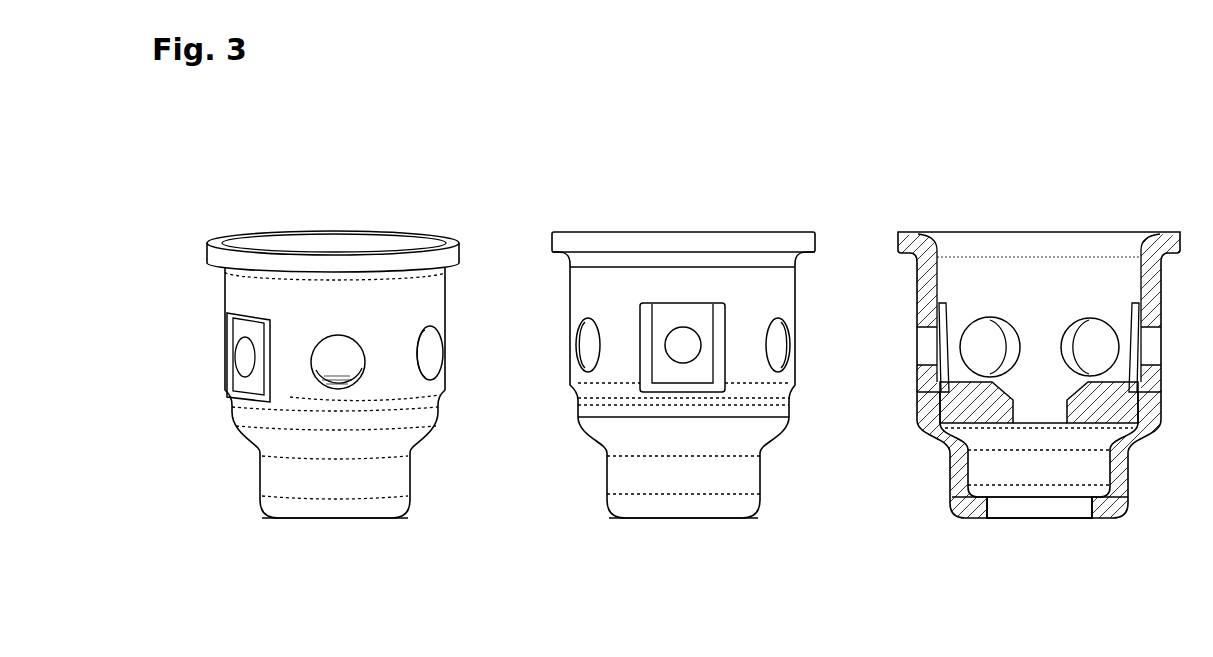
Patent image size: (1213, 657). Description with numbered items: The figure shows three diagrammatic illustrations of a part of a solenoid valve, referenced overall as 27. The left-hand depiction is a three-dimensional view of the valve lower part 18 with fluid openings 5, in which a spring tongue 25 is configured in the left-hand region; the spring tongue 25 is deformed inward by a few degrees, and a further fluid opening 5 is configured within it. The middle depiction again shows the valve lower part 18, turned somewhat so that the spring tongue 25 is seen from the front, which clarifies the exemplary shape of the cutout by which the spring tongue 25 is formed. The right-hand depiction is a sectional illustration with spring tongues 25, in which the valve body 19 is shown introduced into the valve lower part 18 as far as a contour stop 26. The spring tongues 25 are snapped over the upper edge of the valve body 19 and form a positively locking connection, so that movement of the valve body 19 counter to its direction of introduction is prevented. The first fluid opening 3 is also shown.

The cage component 27 is at (351, 201).
The fluid openings 5 is at (242, 357).
The spring tongue 25 is at (242, 383).
The valve lower part 18 is at (333, 512).
The valve body 19 is at (942, 416).
The contour stop 26 is at (1135, 439).
The first fluid opening 3 is at (1039, 512).